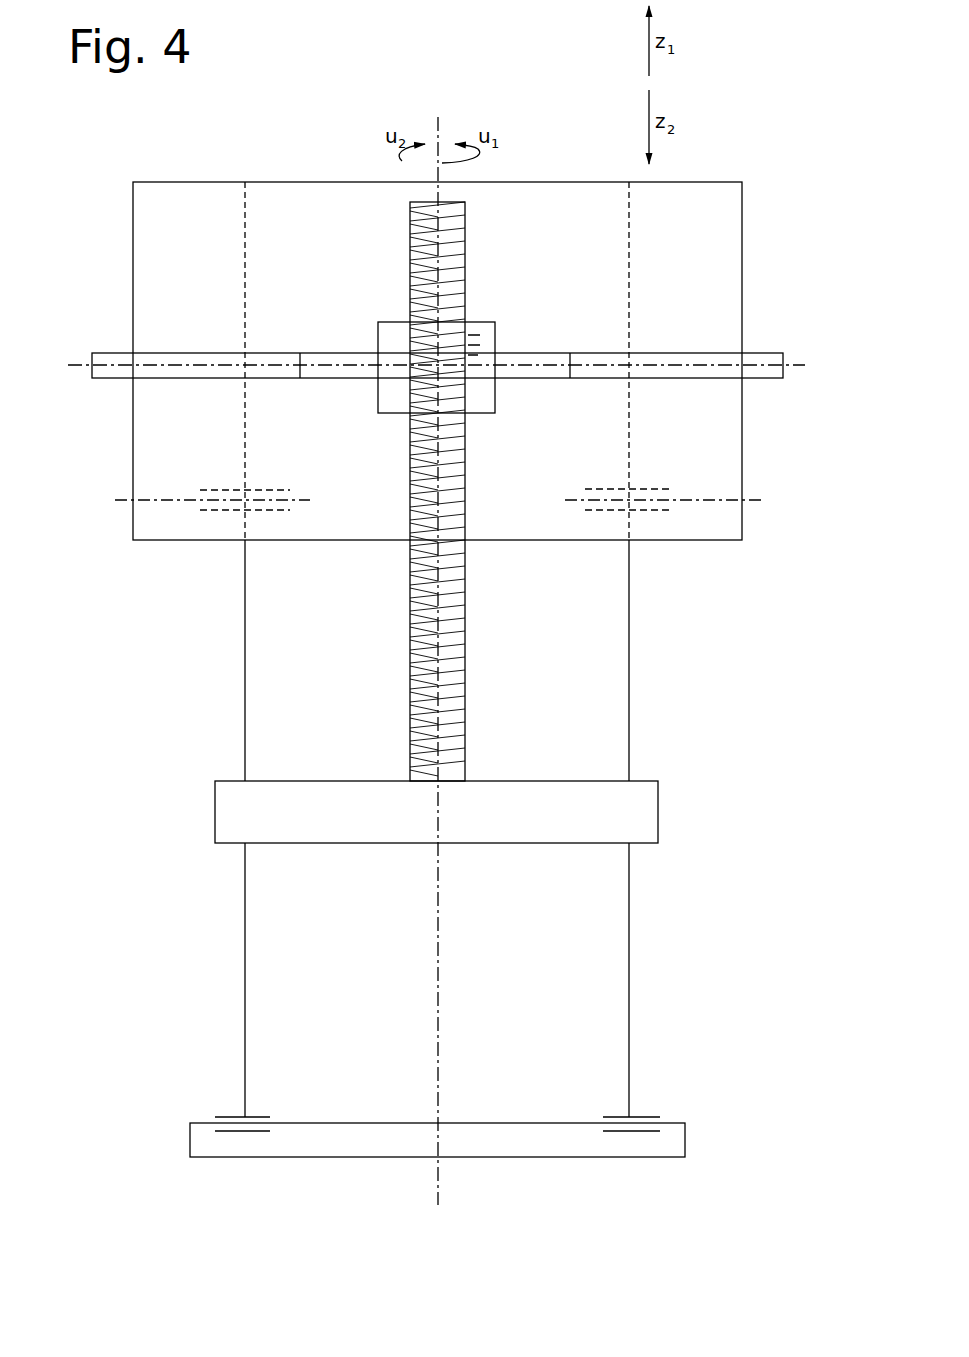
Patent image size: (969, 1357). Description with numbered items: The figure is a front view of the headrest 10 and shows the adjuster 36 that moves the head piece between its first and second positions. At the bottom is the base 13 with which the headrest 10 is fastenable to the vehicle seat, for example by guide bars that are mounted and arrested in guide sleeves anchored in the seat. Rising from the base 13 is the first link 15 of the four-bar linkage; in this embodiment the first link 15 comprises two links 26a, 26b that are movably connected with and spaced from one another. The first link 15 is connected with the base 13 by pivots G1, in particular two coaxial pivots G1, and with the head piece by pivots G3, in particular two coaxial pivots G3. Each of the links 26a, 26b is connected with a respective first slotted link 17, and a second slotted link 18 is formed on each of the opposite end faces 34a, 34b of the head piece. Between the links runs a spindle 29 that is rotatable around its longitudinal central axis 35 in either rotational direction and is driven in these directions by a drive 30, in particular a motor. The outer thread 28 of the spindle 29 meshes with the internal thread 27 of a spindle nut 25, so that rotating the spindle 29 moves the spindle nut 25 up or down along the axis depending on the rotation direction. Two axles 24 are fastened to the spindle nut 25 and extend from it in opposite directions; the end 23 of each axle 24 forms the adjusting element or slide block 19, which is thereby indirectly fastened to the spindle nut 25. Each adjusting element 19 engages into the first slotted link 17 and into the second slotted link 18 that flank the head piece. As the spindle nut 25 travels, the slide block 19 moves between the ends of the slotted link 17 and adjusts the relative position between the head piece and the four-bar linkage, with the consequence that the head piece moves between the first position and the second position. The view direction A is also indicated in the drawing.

The headrest 10 is at (742, 82).
The base 13 is at (352, 1142).
The first link 15 is at (445, 828).
The first slotted link 17 is at (242, 262).
The second slotted link 18 is at (131, 296).
The adjusting element 19 is at (102, 380).
The end of the axle 23 is at (92, 350).
The axle 24 is at (302, 352).
The spindle nut 25 is at (480, 330).
The link 26a is at (244, 938).
The link 26b is at (631, 937).
The internal thread 27 is at (440, 366).
The outer thread 28 is at (443, 491).
The spindle 29 is at (410, 572).
The drive 30 is at (614, 810).
The end face of the head piece 34a is at (128, 520).
The end face of the head piece 34b is at (772, 512).
The longitudinal central axis 35 is at (441, 125).
The adjuster 36 is at (366, 672).
The pivot G1 is at (688, 1050).
The pivot G3 is at (706, 578).
The viewing direction A is at (855, 475).